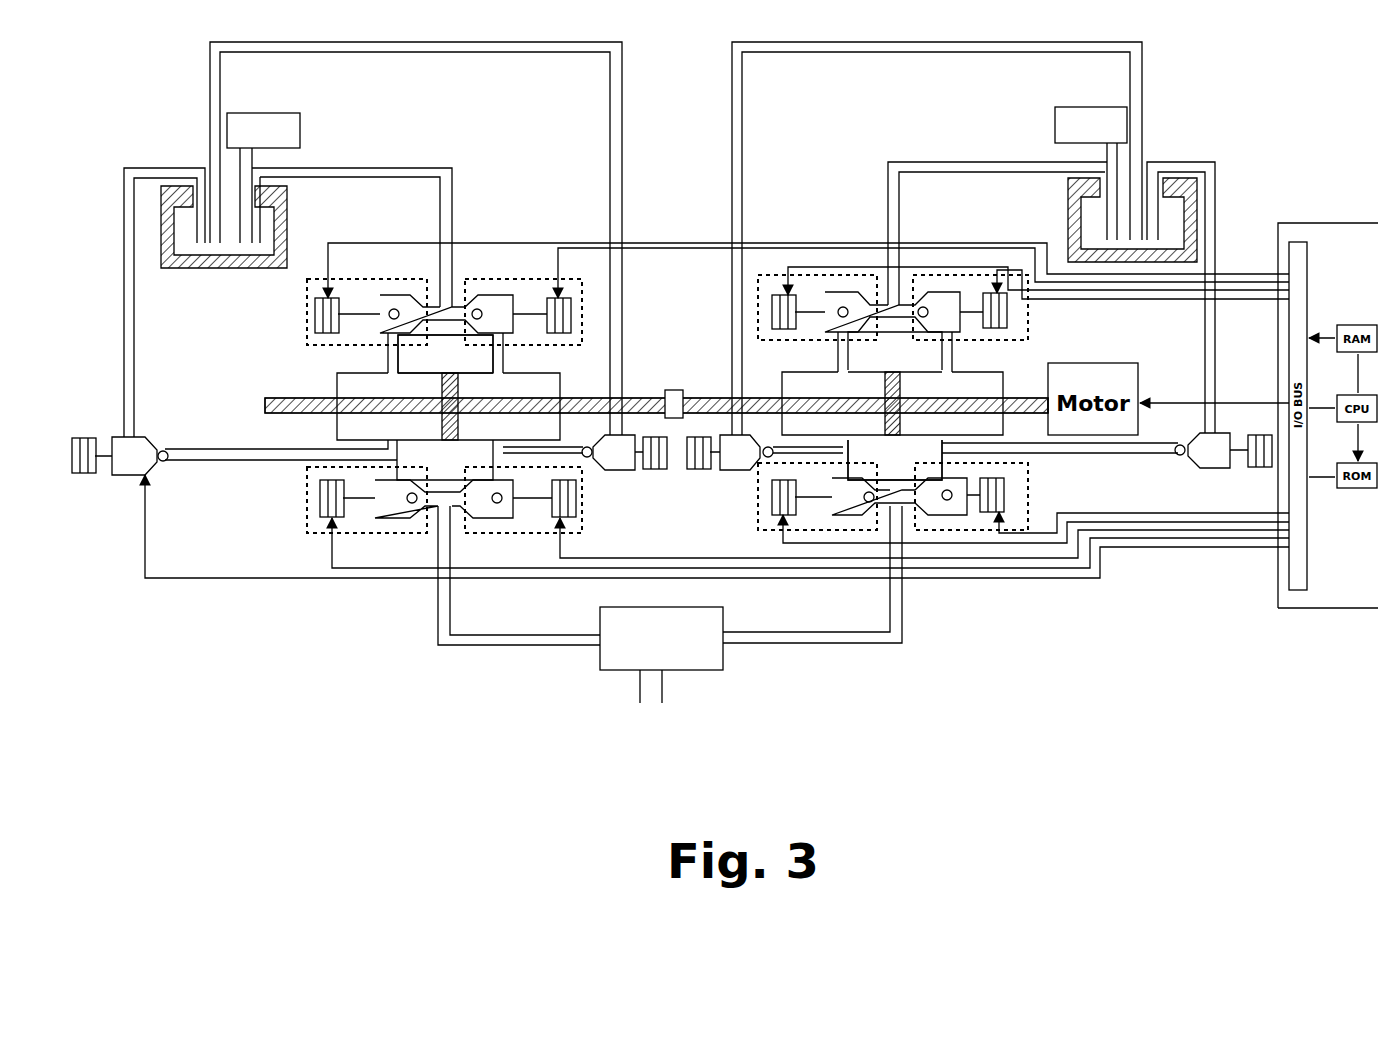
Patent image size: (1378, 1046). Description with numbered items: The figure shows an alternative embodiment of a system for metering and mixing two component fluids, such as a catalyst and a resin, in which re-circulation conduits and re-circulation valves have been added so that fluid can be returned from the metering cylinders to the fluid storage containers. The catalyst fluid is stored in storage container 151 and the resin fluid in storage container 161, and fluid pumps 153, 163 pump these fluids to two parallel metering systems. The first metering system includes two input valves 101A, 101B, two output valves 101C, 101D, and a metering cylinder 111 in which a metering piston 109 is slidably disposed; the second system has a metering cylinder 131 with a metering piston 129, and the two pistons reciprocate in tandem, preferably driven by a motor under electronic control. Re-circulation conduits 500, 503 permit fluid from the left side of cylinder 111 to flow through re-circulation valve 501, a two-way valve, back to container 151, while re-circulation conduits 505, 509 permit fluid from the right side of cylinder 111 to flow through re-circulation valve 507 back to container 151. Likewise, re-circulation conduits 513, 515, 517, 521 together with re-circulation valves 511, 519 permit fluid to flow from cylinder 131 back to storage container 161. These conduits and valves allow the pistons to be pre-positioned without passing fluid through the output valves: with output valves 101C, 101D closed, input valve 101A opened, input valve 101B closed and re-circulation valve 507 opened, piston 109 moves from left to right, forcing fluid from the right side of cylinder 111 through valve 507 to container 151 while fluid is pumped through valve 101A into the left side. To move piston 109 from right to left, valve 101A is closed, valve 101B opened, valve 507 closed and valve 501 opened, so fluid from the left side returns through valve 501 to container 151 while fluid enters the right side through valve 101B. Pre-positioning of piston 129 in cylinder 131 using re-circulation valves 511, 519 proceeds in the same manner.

The input valve 101A is at (307, 322).
The input valve 101B is at (522, 279).
The output valve 101C is at (308, 522).
The output valve 101D is at (510, 537).
The metering piston 109 is at (460, 393).
The metering cylinder 111 is at (472, 370).
The metering piston 129 is at (893, 440).
The metering cylinder 131 is at (870, 373).
The storage container 151 is at (192, 267).
The fluid pump 153 is at (243, 112).
The storage container 161 is at (1175, 226).
The fluid pump 163 is at (1063, 107).
The re-circulation conduit 500 is at (207, 463).
The re-circulation valve 501 is at (128, 478).
The re-circulation conduit 503 is at (123, 260).
The re-circulation conduit 505 is at (570, 463).
The re-circulation valve 507 is at (625, 470).
The re-circulation conduit 509 is at (622, 338).
The re-circulation valve 511 is at (737, 470).
The re-circulation conduit 513 is at (787, 455).
The re-circulation conduit 515 is at (730, 312).
The re-circulation conduit 517 is at (1138, 453).
The re-circulation valve 519 is at (1207, 467).
The re-circulation conduit 521 is at (1215, 372).